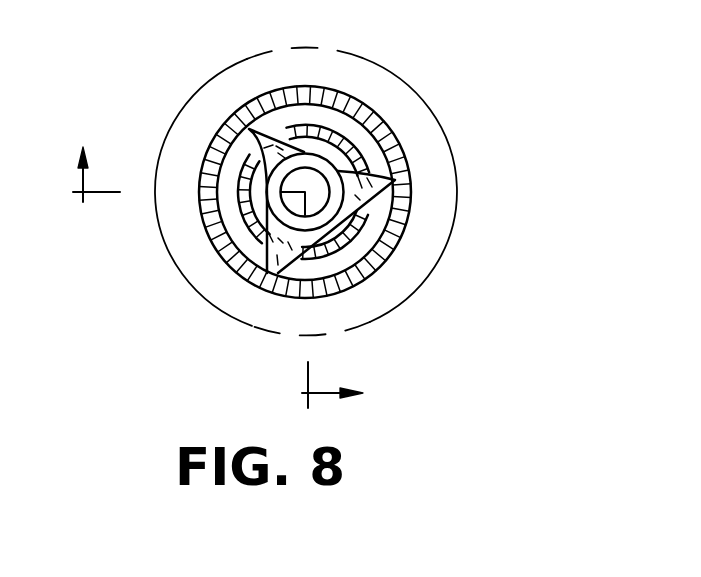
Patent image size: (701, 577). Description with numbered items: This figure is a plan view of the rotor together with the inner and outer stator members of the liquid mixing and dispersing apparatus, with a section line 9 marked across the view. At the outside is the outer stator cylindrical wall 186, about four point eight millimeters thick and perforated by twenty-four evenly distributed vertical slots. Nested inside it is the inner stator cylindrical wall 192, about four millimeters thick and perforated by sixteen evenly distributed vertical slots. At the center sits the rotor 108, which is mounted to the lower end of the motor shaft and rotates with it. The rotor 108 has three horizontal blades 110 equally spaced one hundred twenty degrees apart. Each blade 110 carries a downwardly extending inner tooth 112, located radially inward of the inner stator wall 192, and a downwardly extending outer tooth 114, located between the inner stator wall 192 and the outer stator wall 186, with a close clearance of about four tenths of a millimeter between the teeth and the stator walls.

The rotor 108 is at (332, 157).
The horizontal blades 110 is at (253, 152).
The inner tooth 112 is at (235, 208).
The outer tooth 114 is at (207, 137).
The outer stator cylindrical wall 186 is at (340, 92).
The inner stator cylindrical wall 192 is at (306, 128).
The section line 9- 9 is at (206, 284).